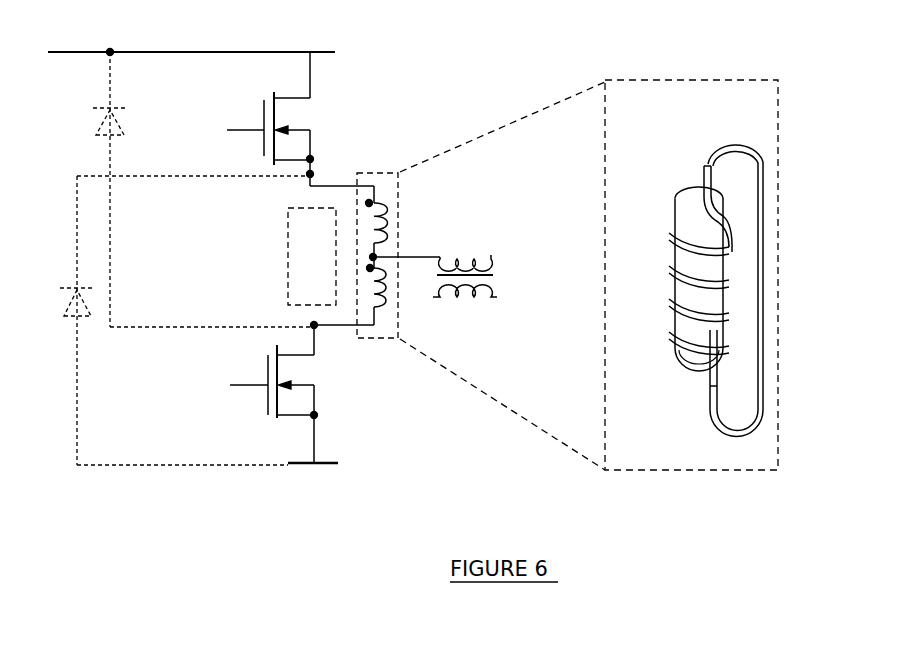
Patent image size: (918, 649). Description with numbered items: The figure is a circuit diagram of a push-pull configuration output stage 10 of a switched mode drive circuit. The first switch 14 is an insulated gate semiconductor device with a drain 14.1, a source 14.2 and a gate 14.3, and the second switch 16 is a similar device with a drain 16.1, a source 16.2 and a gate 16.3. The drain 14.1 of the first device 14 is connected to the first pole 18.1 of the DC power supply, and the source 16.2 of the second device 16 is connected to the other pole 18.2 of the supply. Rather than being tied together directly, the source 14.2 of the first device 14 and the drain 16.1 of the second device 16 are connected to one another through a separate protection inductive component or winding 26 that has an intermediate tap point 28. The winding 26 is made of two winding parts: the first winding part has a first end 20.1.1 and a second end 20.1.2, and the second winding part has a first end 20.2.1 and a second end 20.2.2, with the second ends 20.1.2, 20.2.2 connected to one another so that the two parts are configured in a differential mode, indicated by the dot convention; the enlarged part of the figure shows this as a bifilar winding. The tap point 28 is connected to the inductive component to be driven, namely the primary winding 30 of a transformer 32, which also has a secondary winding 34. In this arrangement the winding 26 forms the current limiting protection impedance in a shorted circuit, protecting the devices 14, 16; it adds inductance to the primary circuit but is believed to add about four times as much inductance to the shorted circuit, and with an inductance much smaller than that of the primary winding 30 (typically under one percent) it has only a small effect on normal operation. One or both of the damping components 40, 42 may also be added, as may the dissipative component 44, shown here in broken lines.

The inverter driver circuit 10 is at (378, 88).
The first switch 14 is at (267, 137).
The drain 14.1 is at (290, 97).
The source 14.2 is at (294, 158).
The gate 14.3 is at (245, 128).
The second switch 16 is at (267, 384).
The drain 16.1 is at (297, 354).
The source 16.2 is at (296, 418).
The gate 16.3 is at (248, 387).
The first pole 18.1 is at (312, 52).
The other pole 18.2 is at (318, 466).
The first end of the first winding part 20.1.1 is at (371, 200).
The second end of the first winding part 20.1.2 is at (377, 243).
The first end of the second winding part 20.2.1 is at (375, 310).
The second end of the second winding part 20.2.2 is at (368, 272).
The protection inductive component or winding 26 is at (449, 185).
The intermediate tap point 28 is at (376, 256).
The primary winding 30 is at (477, 254).
The transformer 32 is at (515, 289).
The secondary winding 34 is at (478, 299).
The damping component 40 is at (73, 317).
The damping component 42 is at (97, 134).
The dissipative component 44 is at (288, 252).